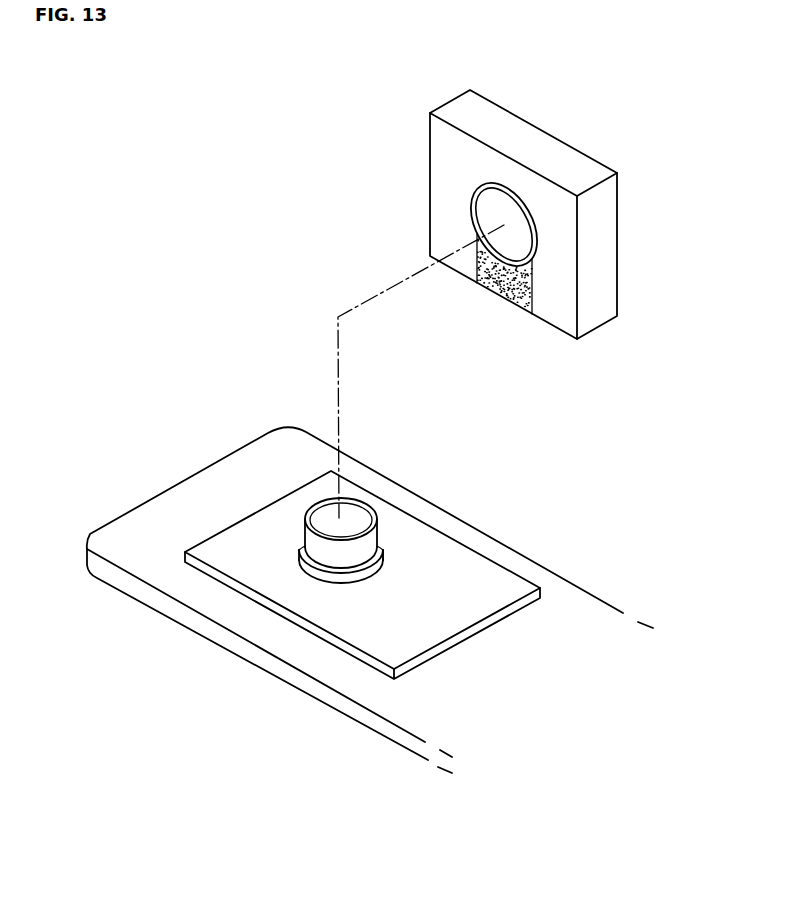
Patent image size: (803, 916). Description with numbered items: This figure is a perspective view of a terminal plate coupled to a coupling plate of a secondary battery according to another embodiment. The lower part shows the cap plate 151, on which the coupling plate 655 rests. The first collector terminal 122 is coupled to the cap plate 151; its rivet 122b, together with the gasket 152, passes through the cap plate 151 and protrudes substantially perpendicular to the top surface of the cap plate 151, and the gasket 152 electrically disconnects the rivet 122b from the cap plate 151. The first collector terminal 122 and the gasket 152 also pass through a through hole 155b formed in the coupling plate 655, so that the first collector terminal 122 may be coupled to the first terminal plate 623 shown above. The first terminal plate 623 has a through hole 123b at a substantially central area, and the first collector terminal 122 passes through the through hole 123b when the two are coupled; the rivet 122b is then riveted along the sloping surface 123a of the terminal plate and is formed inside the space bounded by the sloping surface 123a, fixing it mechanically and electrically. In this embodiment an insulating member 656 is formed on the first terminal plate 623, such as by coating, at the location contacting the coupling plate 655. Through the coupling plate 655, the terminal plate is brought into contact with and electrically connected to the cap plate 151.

The first terminal plate 623 is at (532, 143).
The sloping surface 123a is at (473, 188).
The through hole 123b is at (490, 217).
The insulating member 656 is at (500, 287).
The first collector terminal 122 is at (386, 461).
The cap plate 151 is at (162, 510).
The coupling plate 655 is at (492, 588).
The gasket 152 is at (332, 574).
The rivet 122b is at (313, 542).
The through hole 155b is at (382, 552).